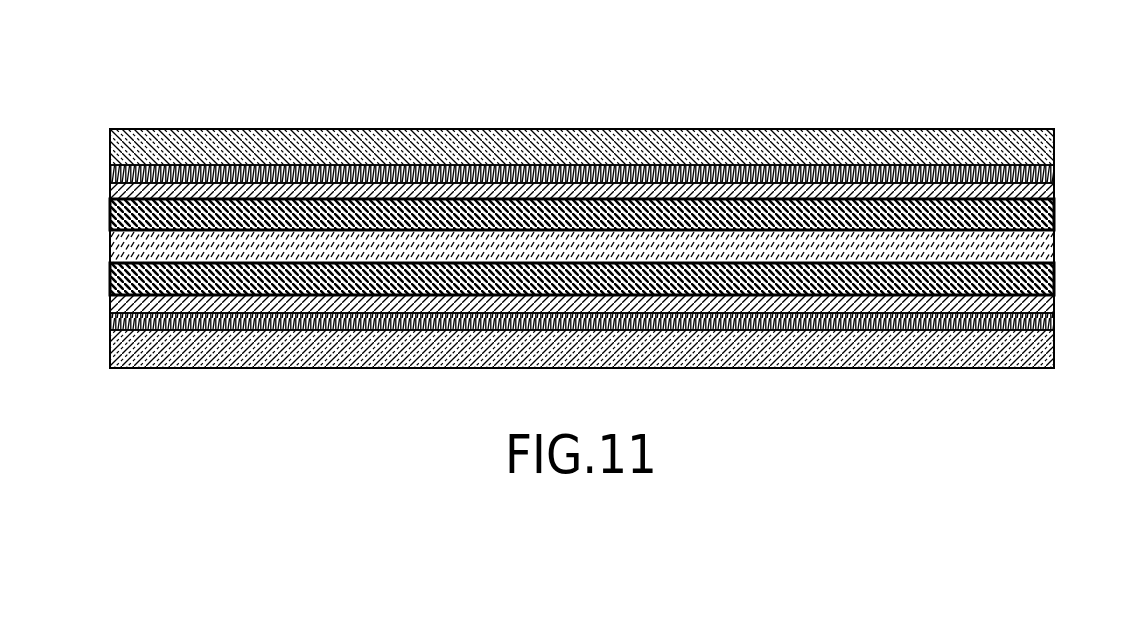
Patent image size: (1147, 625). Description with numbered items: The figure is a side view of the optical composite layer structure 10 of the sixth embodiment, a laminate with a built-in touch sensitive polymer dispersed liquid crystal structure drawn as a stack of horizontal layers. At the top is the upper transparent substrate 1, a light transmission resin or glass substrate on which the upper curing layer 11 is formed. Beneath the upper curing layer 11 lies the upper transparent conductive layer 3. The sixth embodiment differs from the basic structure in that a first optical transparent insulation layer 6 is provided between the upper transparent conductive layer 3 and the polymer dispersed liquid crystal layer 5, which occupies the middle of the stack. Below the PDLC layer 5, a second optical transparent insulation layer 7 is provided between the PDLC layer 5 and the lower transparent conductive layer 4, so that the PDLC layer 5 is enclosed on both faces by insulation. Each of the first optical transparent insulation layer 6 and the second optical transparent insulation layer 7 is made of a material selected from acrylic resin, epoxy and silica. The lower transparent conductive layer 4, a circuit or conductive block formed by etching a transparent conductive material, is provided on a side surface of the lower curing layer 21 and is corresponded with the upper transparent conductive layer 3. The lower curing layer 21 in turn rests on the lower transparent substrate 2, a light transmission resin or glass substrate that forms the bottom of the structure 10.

The optical composite layer structure 10 is at (594, 69).
The upper transparent substrate 1 is at (1046, 147).
The upper curing layer 11 is at (1050, 172).
The upper transparent conductive layer 3 is at (1046, 191).
The first optical transparent insulation layer 6 is at (113, 215).
The polymer dispersed liquid crystal (PDLC) layer 5 is at (120, 241).
The second optical transparent insulation layer 7 is at (112, 283).
The lower transparent conductive layer 4 is at (1046, 306).
The lower curing layer 21 is at (1050, 322).
The lower transparent substrate 2 is at (1045, 350).